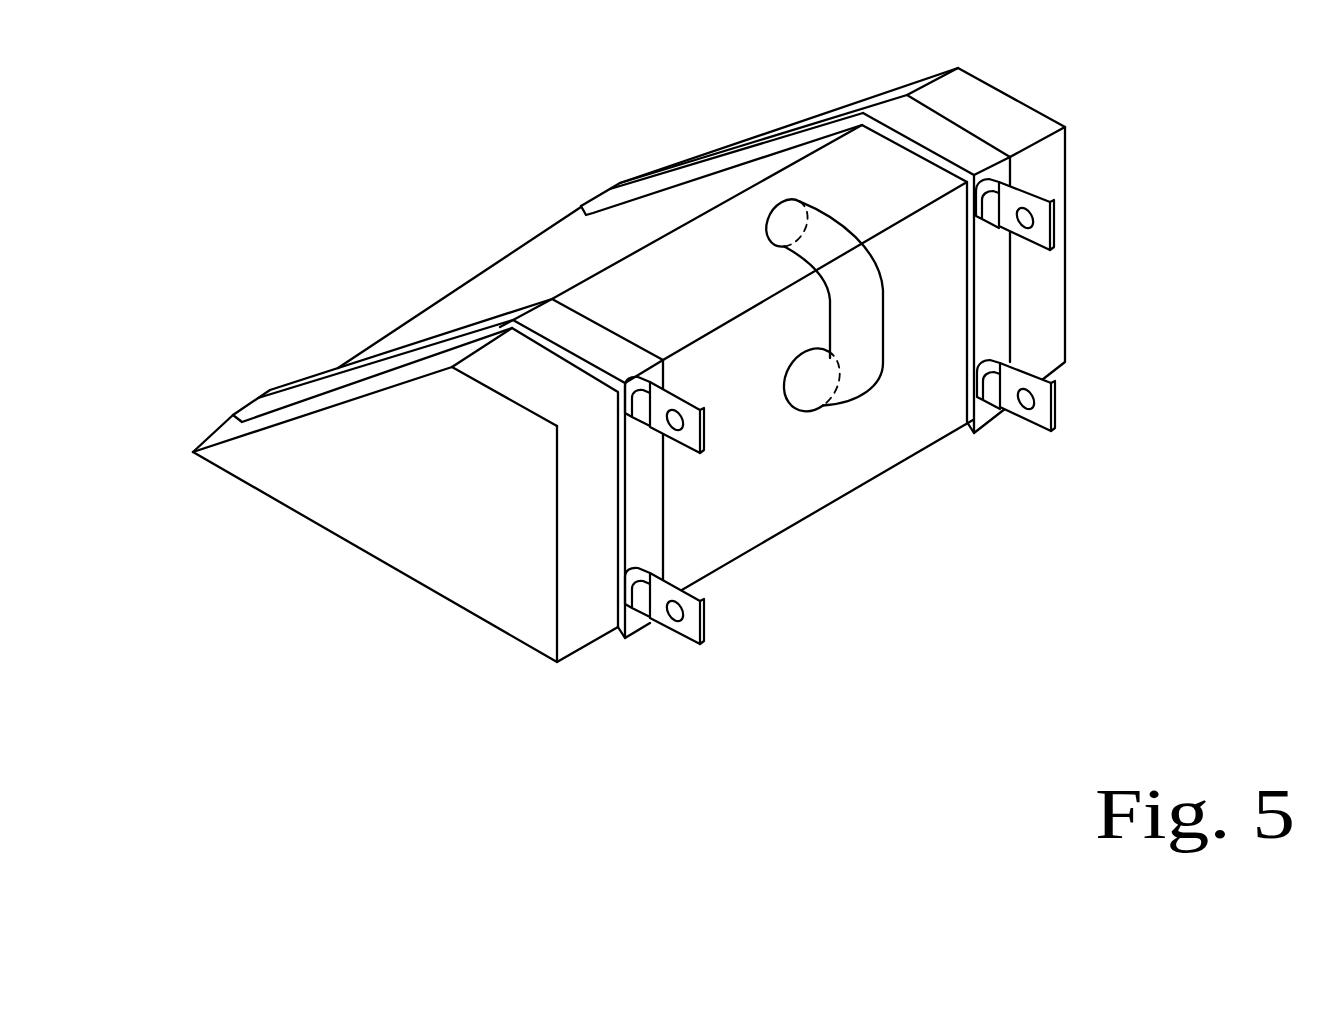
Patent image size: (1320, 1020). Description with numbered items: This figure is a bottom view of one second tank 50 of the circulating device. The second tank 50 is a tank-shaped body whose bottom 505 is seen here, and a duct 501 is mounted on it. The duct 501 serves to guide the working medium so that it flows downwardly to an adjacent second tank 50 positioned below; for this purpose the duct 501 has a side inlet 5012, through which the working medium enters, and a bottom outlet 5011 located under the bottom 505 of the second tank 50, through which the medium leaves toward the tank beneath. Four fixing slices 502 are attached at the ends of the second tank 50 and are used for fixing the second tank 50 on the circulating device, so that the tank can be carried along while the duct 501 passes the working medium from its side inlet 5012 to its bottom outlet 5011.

The second tank 50 is at (398, 503).
The duct 501 is at (862, 292).
The fixing slices 502 is at (689, 634).
The bottom 505 is at (633, 293).
The bottom outlet 5011 is at (783, 223).
The side inlet 5012 is at (805, 368).